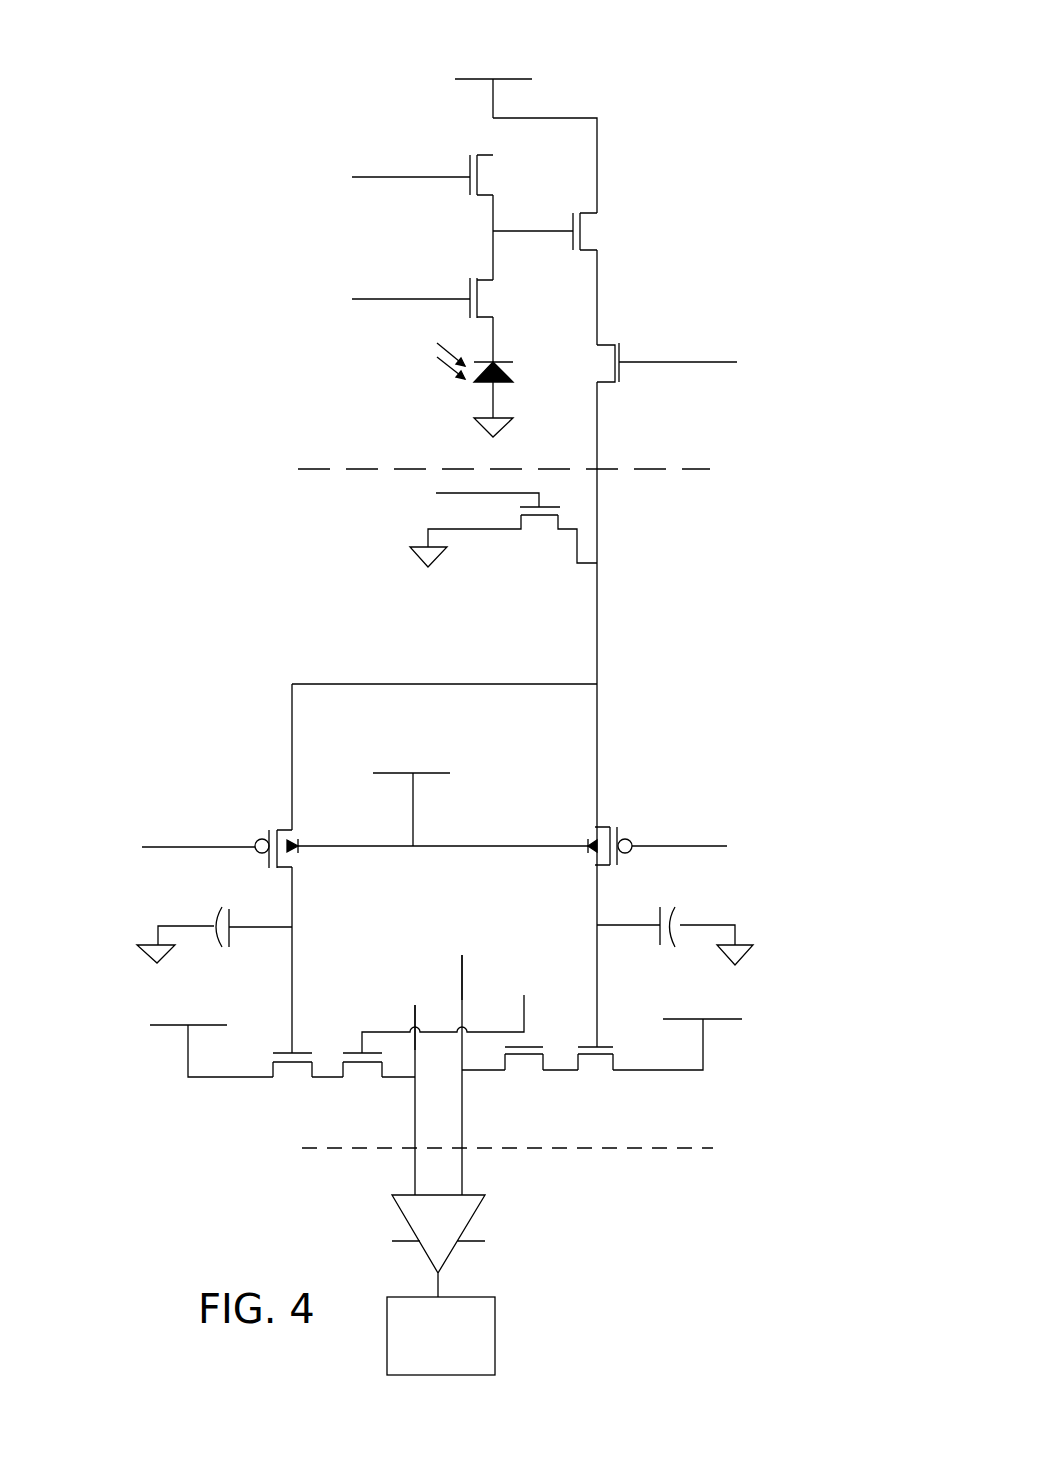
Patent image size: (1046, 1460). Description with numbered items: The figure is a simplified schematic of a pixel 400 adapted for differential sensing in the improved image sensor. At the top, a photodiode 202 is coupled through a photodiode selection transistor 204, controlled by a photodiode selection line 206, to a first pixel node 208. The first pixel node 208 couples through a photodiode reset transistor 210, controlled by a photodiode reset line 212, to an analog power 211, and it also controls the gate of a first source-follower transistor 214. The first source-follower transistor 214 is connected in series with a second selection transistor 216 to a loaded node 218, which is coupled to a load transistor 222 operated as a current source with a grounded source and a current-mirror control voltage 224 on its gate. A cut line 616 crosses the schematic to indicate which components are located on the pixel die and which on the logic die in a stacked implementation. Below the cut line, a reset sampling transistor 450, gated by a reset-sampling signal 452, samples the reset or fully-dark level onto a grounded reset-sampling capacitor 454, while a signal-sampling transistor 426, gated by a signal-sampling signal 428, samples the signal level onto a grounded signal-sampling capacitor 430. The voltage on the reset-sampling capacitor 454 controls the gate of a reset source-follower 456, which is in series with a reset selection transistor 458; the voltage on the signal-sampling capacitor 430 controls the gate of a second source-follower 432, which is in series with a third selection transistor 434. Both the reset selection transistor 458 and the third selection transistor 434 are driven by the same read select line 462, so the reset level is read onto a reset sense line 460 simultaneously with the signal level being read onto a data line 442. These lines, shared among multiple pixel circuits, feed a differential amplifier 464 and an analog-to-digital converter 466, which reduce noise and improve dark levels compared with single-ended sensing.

The pixel 400 is at (718, 53).
The analog power 211 is at (502, 73).
The photodiode reset line 212 is at (423, 175).
The photodiode reset transistor 210 is at (479, 178).
The first pixel node 208 is at (495, 222).
The first source-follower transistor 214 is at (587, 233).
The photodiode selection transistor 204 is at (470, 280).
The photodiode selection line 206 is at (418, 299).
The photodiode 202 is at (477, 373).
The second selection transistor 216 is at (616, 355).
The loaded node 218 is at (597, 453).
The cut line 616 is at (408, 470).
The current-mirror control voltage 224 is at (468, 495).
The load transistor 222 is at (560, 523).
The reset sampling transistor 450 is at (257, 832).
The reset-sampling signal 452 is at (177, 847).
The reset-sampling capacitor 454 is at (215, 912).
The signal-sampling transistor 426 is at (619, 832).
The signal-sampling signal 428 is at (700, 846).
The signal-sampling capacitor 430 is at (675, 912).
The data line 442 is at (462, 973).
The second source-follower 432 is at (590, 1043).
The reset sense line 460 is at (415, 1007).
The read select line 462 is at (362, 1038).
The reset source-follower 456 is at (288, 1080).
The reset selection transistor 458 is at (367, 1072).
The third selection transistor 434 is at (520, 1062).
The differential amplifier 464 is at (438, 1246).
The analog-to-digital converter 466 is at (441, 1336).